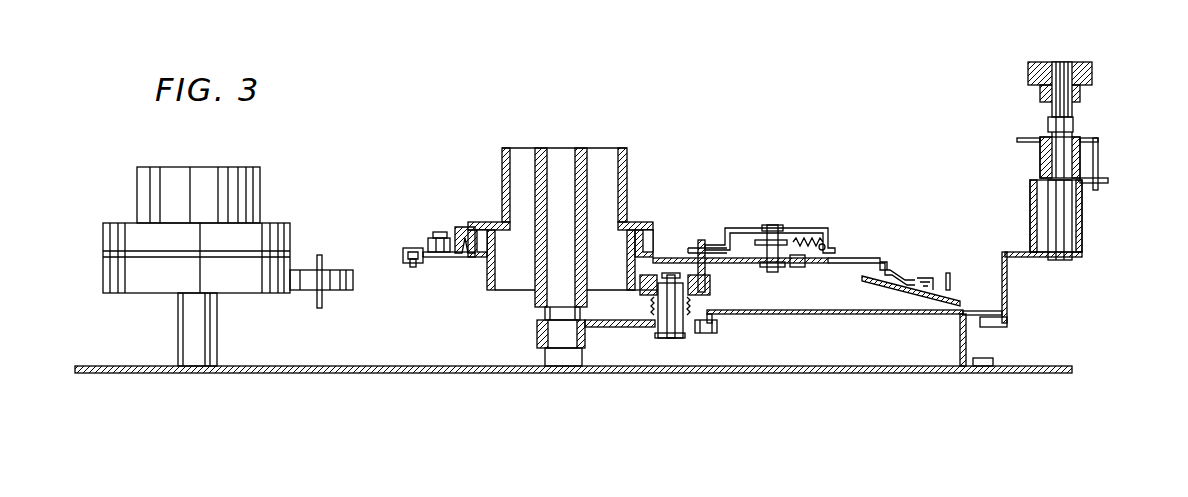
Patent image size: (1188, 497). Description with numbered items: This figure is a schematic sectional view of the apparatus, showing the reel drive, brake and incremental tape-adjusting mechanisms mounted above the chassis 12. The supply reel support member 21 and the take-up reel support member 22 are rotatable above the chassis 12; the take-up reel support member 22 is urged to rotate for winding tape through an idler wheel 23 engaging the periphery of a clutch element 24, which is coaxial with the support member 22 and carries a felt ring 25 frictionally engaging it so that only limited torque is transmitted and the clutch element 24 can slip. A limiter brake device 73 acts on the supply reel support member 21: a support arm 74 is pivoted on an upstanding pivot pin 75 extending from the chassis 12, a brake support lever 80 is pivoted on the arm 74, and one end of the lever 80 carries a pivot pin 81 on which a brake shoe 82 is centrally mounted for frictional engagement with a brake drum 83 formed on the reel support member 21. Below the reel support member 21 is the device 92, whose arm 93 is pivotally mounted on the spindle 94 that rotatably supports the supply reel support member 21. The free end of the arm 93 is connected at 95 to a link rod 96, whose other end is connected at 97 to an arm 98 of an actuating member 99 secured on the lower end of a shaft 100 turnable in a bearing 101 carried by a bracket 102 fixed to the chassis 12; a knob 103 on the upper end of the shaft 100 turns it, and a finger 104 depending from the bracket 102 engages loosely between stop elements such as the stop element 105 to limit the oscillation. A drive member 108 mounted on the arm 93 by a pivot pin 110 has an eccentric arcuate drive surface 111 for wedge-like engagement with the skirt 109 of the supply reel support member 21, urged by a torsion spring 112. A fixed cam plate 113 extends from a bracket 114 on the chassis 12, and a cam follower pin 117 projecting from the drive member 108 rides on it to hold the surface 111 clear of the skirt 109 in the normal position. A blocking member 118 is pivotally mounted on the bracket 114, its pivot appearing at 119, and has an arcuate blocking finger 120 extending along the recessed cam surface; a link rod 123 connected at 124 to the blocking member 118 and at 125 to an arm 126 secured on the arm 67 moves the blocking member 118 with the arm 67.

The chassis 12 is at (645, 374).
The supply reel support member 21 is at (566, 224).
The take-up reel support member 22 is at (262, 166).
The idler wheel 23 is at (350, 291).
The clutch element 24 is at (114, 284).
The felt ring 25 is at (110, 254).
The arm 67 is at (878, 283).
The limiter brake device 73 is at (411, 240).
The support arm 74 is at (400, 247).
The pivot pin 75 is at (421, 267).
The brake support lever 80 is at (456, 258).
The pivot pin 81 is at (434, 231).
The brake shoe 82 is at (457, 227).
The brake drum 83 is at (656, 232).
The device 92 is at (674, 346).
The arm 93 is at (613, 332).
The spindle 94 is at (562, 358).
The pivotal connection 95 is at (718, 324).
The link rod 96 is at (893, 316).
The pivotal connection 97 is at (993, 324).
The arm 98 is at (1004, 253).
The actuating member 99 is at (1029, 213).
The shaft 100 is at (1068, 232).
The bearing 101 is at (1040, 160).
The bracket 102 is at (1025, 137).
The knob 103 is at (1050, 63).
The finger 104 is at (1102, 147).
The stop element 105 is at (1110, 183).
The drive member 108 is at (655, 303).
The skirt 109 is at (483, 291).
The pivot pin 110 is at (677, 340).
The arcuate drive surface 111 is at (637, 284).
The torsion spring 112 is at (692, 302).
The cam plate 113 is at (713, 247).
The bracket 114 is at (750, 229).
The cam follower pin 117 is at (700, 239).
The blocking member 118 is at (747, 265).
The bolt 119 is at (779, 268).
The arcuate blocking finger 120 is at (701, 238).
The link rod 123 is at (857, 255).
The pivotal connection 124 is at (792, 265).
The pivotal connection 125 is at (888, 258).
The arm 126 is at (905, 268).